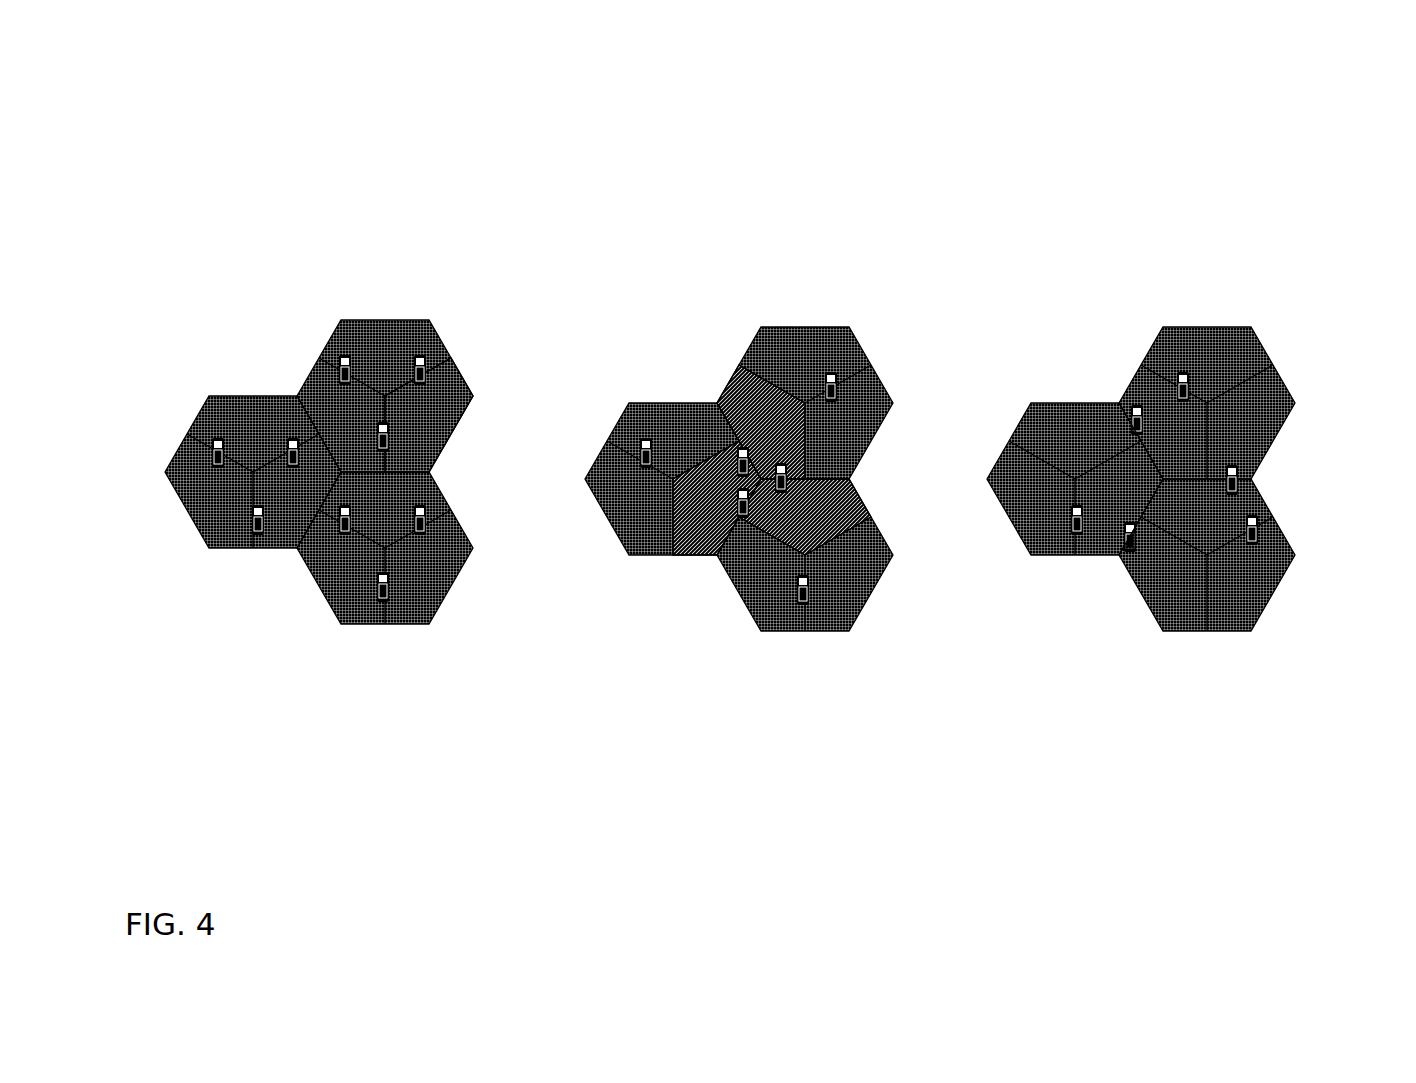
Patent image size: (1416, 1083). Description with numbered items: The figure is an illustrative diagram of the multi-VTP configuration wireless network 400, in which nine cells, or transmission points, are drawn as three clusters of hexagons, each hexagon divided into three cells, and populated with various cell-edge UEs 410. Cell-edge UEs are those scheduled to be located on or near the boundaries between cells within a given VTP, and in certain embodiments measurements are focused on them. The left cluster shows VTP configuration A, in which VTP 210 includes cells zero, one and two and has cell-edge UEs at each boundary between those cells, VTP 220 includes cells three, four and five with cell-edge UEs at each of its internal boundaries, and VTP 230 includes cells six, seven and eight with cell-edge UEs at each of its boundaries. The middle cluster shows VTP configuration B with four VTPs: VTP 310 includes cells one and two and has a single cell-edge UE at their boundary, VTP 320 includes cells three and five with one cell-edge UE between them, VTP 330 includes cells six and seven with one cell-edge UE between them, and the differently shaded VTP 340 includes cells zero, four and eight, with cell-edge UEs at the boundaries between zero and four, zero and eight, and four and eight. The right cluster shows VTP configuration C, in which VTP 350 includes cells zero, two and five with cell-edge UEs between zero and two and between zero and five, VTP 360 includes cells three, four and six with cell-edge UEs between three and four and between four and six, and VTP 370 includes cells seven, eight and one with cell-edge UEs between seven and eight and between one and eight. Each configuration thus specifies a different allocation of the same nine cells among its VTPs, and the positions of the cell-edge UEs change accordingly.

The multi-VTP configuration wireless network with cell-edge UEs 400 is at (262, 88).
The VTP 220 is at (337, 320).
The cell-edge UEs 410 is at (440, 340).
The VTP 230 is at (166, 471).
The VTP 210 is at (427, 622).
The VTP 320 is at (860, 328).
The VTP 340 is at (718, 402).
The VTP 330 is at (586, 479).
The VTP 310 is at (855, 620).
The VTP 360 is at (1163, 329).
The VTP 370 is at (988, 479).
The VTP 350 is at (1295, 555).